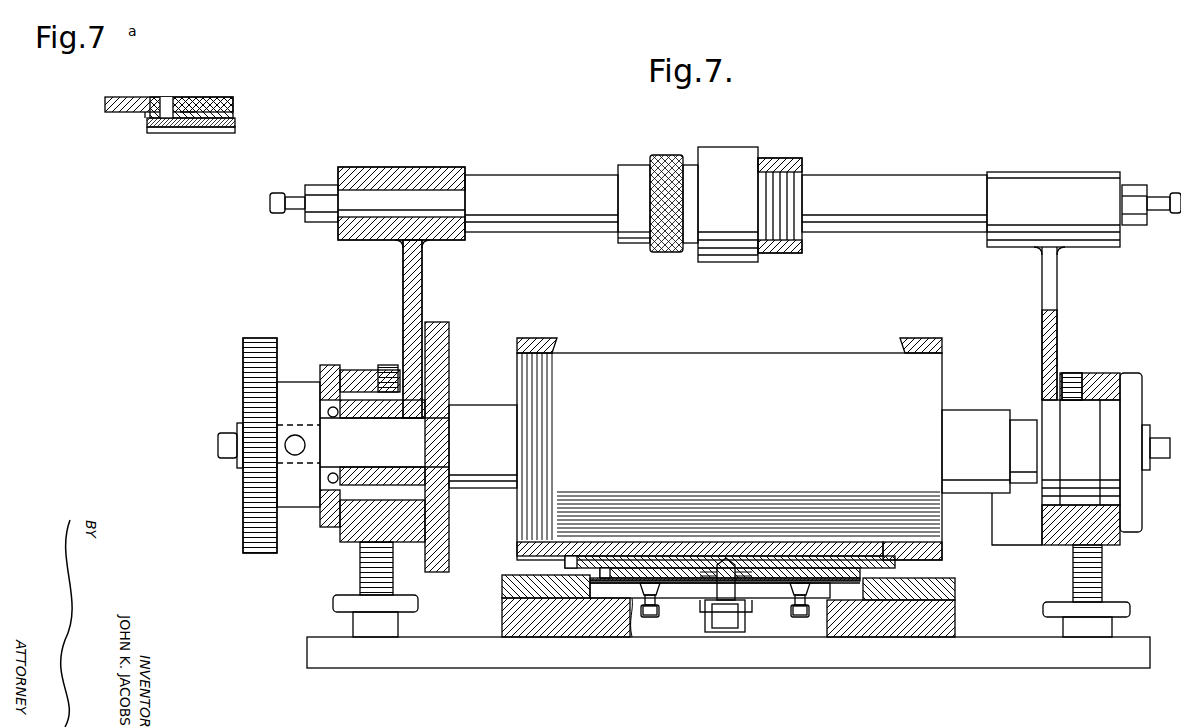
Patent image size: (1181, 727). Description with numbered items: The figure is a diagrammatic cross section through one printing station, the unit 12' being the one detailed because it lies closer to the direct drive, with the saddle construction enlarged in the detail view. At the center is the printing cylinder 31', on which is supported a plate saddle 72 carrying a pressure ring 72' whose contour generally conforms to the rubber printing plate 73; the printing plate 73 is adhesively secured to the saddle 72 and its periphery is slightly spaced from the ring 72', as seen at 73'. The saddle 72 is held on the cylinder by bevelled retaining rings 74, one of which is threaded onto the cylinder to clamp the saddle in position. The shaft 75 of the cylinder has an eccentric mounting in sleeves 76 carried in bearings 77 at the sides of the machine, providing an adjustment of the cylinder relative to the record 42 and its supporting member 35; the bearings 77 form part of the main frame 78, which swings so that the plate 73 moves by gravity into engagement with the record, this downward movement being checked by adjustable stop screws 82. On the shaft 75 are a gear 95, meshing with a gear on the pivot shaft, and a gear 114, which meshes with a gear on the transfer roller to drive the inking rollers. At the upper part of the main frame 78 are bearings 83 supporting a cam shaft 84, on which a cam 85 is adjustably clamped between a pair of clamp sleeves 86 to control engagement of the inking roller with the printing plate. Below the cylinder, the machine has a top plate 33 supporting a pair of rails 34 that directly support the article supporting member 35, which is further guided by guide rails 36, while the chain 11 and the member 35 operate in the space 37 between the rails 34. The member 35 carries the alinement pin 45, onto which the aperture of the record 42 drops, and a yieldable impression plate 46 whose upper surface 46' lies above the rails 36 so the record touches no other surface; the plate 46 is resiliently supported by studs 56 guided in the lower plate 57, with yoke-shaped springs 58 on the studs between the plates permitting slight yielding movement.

In FIG. 7A, the plate saddle 72 is at (124, 98).
In FIG. 7, the plate saddle 72 is at (725, 531).
In FIG. 7A, the rubber printing plate 73 is at (210, 107).
In FIG. 7, the rubber printing plate 73 is at (730, 541).
In FIG. 7A, the pressure ring 72' is at (119, 136).
In FIG. 7, the pressure ring 72' is at (581, 520).
In FIG. 7A, the spacing between printing plate and pressure ring 73' is at (172, 136).
In FIG. 7, the spacing between printing plate and pressure ring 73' is at (607, 535).
In FIG. 7A, the record 42 is at (190, 125).
In FIG. 7, the record 42 is at (570, 570).
In FIG. 7A, the impression plate 46 is at (191, 145).
In FIG. 7, the impression plate 46 is at (725, 548).
In FIG. 7, the upper surface of impression plate 46' is at (725, 533).
In FIG. 7, the bearings 83 is at (393, 167).
In FIG. 7, the cam shaft 84 is at (540, 175).
In FIG. 7, the cam 85 is at (728, 147).
In FIG. 7, the clamp sleeves 86 is at (780, 253).
In FIG. 7, the printing unit 12' is at (962, 138).
In FIG. 7, the main frame 78 is at (403, 276).
In FIG. 7, the gear 95 is at (262, 338).
In FIG. 7, the sleeves 76 is at (356, 365).
In FIG. 7, the bearings 77 is at (380, 370).
In FIG. 7, the gear 114 is at (450, 338).
In FIG. 7, the bevelled retaining rings 74 is at (538, 338).
In FIG. 7, the printing cylinder 31' is at (729, 429).
In FIG. 7, the shaft of the cylinder 75 is at (418, 433).
In FIG. 7, the yoke-shaped springs 58 is at (655, 583).
In FIG. 7, the alinement pin 45 is at (727, 558).
In FIG. 7, the guide rails 36 is at (502, 585).
In FIG. 7, the rails 34 is at (502, 613).
In FIG. 7, the top plate 33 is at (307, 645).
In FIG. 7, the article supporting member 35 is at (592, 598).
In FIG. 7, the space 37 is at (633, 637).
In FIG. 7, the studs 56 is at (651, 617).
In FIG. 7, the lower plate 57 is at (707, 603).
In FIG. 7, the chain 11 is at (742, 632).
In FIG. 7, the adjustable stop screws 82 is at (360, 572).